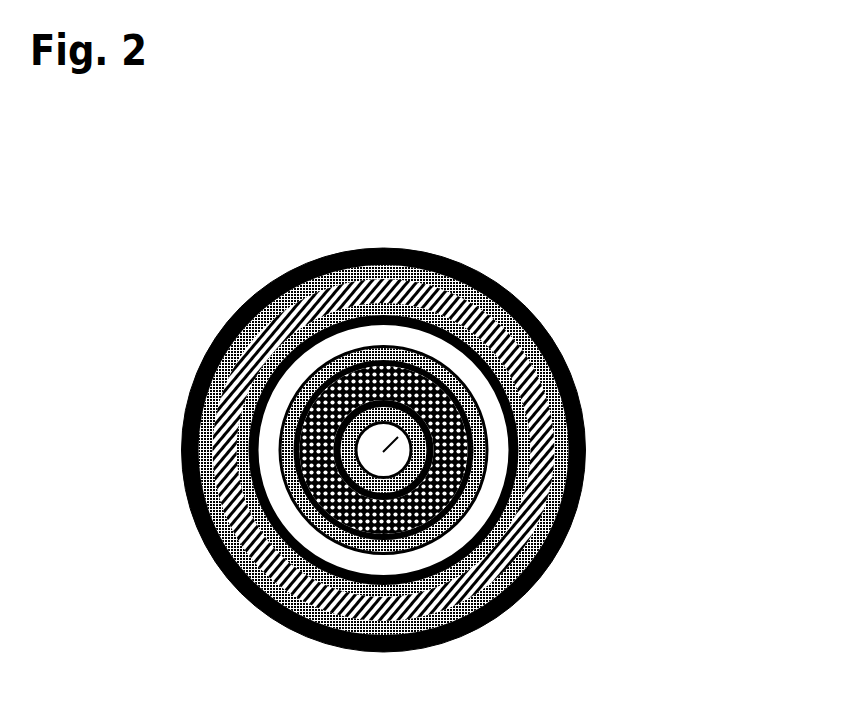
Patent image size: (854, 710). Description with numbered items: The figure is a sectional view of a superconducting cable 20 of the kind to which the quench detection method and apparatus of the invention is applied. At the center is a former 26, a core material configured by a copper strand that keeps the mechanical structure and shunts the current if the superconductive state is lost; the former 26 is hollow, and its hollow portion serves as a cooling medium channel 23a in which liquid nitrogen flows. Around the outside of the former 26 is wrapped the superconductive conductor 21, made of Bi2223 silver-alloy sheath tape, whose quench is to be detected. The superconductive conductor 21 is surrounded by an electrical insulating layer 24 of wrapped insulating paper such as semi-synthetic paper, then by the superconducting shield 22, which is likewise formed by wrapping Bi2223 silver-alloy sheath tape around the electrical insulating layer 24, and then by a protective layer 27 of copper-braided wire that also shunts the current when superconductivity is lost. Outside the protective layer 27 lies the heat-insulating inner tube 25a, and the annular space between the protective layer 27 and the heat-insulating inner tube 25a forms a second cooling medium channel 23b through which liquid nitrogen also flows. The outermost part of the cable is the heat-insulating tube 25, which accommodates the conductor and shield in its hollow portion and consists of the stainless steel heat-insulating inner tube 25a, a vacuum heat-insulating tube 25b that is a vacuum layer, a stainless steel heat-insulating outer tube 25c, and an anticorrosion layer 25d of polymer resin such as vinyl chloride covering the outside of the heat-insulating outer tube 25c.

The superconducting cable 20 is at (268, 228).
The superconductive conductor 21 is at (480, 395).
The superconducting shield 22 is at (497, 432).
The cooling medium channel 23a is at (462, 370).
The cooling medium channel 23b is at (502, 465).
The electrical insulating layer 24 is at (490, 413).
The heat-insulating tube 25 is at (713, 512).
The heat-insulating inner tube 25a is at (573, 503).
The vacuum heat-insulating tube 25b is at (563, 528).
The heat-insulating outer tube 25c is at (553, 550).
The anticorrosion layer 25d is at (542, 568).
The former 26 is at (472, 377).
The protective layer 27 is at (502, 450).